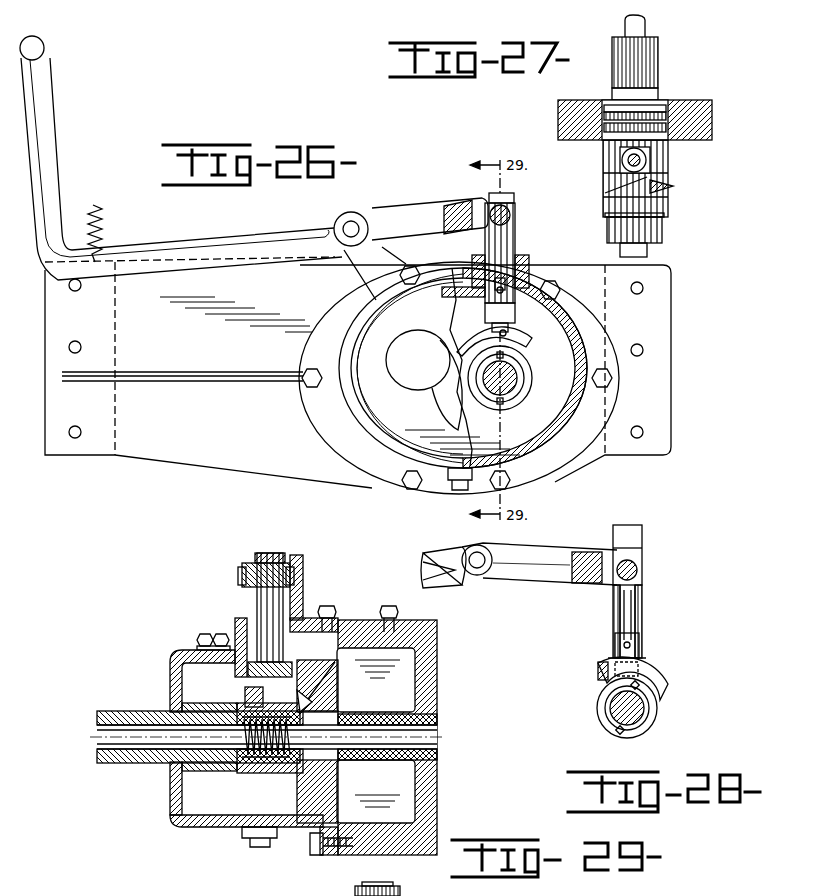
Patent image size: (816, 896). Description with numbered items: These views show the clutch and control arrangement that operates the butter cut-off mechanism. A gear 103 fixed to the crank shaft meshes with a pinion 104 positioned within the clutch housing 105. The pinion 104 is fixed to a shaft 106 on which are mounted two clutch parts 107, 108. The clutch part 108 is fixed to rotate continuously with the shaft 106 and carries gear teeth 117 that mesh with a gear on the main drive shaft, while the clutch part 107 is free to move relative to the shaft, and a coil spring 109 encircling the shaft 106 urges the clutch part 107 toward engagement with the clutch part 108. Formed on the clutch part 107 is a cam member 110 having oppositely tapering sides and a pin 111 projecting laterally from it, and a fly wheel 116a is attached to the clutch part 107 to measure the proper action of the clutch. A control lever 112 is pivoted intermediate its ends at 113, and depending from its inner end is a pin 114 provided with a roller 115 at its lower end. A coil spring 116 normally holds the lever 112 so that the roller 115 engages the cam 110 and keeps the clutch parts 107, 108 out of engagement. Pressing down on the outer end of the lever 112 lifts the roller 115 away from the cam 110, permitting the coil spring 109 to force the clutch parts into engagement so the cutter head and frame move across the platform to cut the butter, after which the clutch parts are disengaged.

In FIG. 29, the gear 103 is at (418, 893).
In FIG. 27, the pinion 104 is at (664, 238).
In FIG. 29, the pinion 104 is at (197, 712).
In FIG. 26, the clutch housing 105 is at (389, 437).
In FIG. 29, the clutch housing 105 is at (174, 822).
In FIG. 27, the shaft 106 is at (648, 253).
In FIG. 29, the shaft 106 is at (112, 737).
In FIG. 28, the shaft 106 is at (627, 706).
In FIG. 27, the clutch part 107 is at (670, 187).
In FIG. 29, the clutch part 107 is at (258, 770).
In FIG. 28, the clutch part 107 is at (656, 710).
In FIG. 27, the clutch part 108 is at (645, 103).
In FIG. 29, the clutch part 108 is at (340, 722).
In FIG. 29, the coil spring 109 is at (248, 757).
In FIG. 26, the cam member 110 is at (528, 341).
In FIG. 27, the cam member 110 is at (606, 203).
In FIG. 29, the cam member 110 is at (245, 691).
In FIG. 28, the cam member 110 is at (667, 678).
In FIG. 27, the pin 111 is at (667, 172).
In FIG. 28, the pin 111 is at (645, 665).
In FIG. 26, the control lever 112 is at (45, 180).
In FIG. 29, the control lever 112 is at (252, 568).
In FIG. 28, the control lever 112 is at (515, 573).
In FIG. 26, the pivot 113 is at (352, 226).
In FIG. 26, the pin 114 is at (512, 263).
In FIG. 29, the pin 114 is at (262, 620).
In FIG. 28, the pin 114 is at (640, 615).
In FIG. 26, the roller 115 is at (530, 300).
In FIG. 27, the roller 115 is at (618, 161).
In FIG. 29, the roller 115 is at (250, 663).
In FIG. 28, the roller 115 is at (606, 673).
In FIG. 26, the coil spring 116 is at (100, 230).
In FIG. 29, the fly wheel 116a is at (323, 672).
In FIG. 27, the gear teeth 117 is at (655, 47).